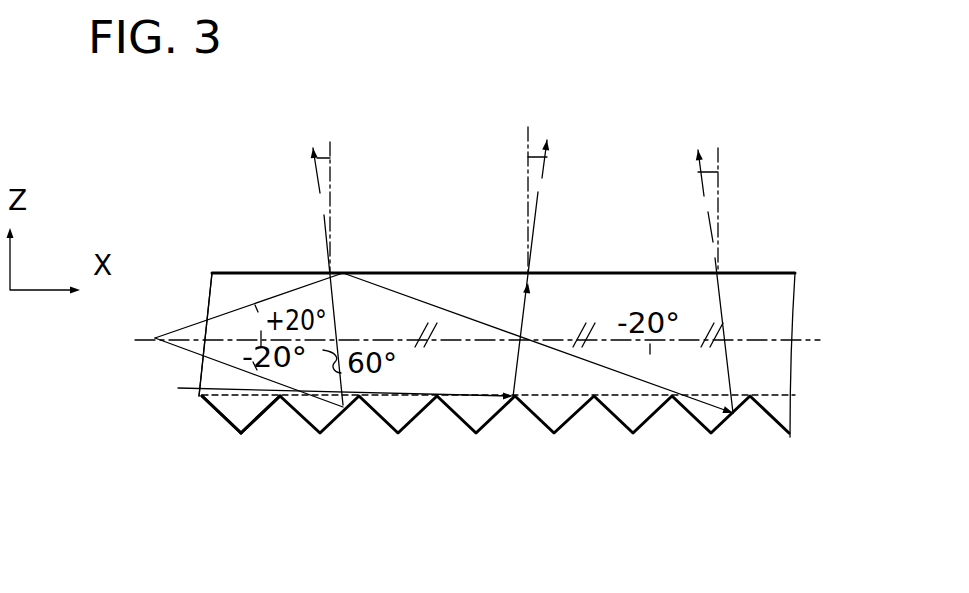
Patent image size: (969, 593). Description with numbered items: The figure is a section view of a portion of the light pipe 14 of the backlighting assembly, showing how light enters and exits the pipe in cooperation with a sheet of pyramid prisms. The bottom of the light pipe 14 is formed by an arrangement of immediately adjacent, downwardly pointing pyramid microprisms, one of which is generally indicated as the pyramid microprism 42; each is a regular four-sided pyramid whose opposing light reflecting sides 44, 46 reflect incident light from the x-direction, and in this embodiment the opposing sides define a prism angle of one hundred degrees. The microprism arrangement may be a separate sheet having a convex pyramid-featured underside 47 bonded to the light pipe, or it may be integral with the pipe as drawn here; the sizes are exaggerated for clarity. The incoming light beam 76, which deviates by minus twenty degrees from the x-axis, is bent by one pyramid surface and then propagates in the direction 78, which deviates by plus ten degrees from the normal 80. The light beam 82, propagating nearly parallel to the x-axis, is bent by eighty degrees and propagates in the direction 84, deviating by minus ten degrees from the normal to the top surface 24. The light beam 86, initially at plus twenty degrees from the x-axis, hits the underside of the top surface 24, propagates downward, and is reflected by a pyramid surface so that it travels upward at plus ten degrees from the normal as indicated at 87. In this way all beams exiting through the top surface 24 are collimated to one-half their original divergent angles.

The light pipe 14 is at (735, 310).
The top surface 24 is at (423, 278).
The pyramid microprism 42 is at (200, 398).
The light reflecting side 44 is at (221, 416).
The light reflecting side 46 is at (251, 410).
The convex pyramid-featured underside 47 is at (560, 433).
The incoming light beam 76 is at (181, 358).
The propagation direction 78 is at (326, 213).
The normal 80 is at (524, 163).
The light beam 82 is at (391, 401).
The propagation direction 84 is at (538, 198).
The light beam 86 is at (227, 304).
The upward propagation direction 87 is at (702, 187).